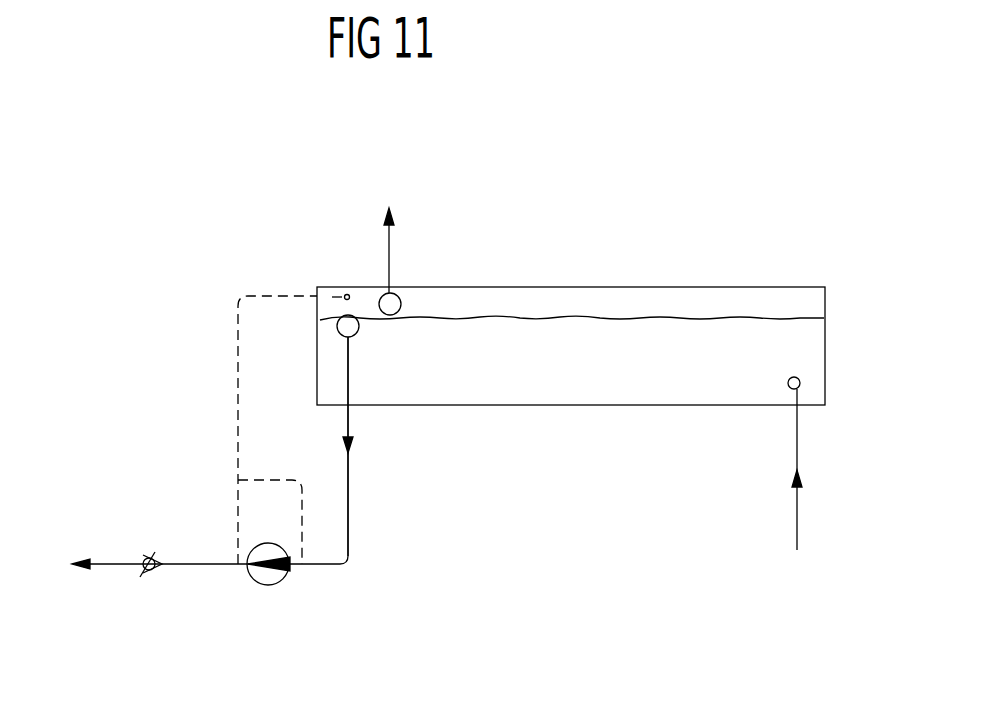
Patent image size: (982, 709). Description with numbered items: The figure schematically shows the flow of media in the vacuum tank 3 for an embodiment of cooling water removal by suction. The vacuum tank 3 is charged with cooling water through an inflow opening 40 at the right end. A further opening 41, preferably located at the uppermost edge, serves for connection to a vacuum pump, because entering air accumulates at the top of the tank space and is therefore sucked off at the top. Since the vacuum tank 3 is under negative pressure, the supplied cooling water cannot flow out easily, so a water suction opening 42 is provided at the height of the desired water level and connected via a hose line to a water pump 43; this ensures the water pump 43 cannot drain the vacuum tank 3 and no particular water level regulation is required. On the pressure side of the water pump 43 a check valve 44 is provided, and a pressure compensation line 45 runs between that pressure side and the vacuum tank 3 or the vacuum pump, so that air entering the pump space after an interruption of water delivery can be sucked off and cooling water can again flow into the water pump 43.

The vacuum tank 3 is at (810, 357).
The inflow opening 40 is at (790, 391).
The further opening 41 is at (395, 294).
The water suction opening 42 is at (357, 331).
The water pump 43 is at (269, 574).
The check valve 44 is at (151, 572).
The pressure compensation line 45 is at (237, 417).